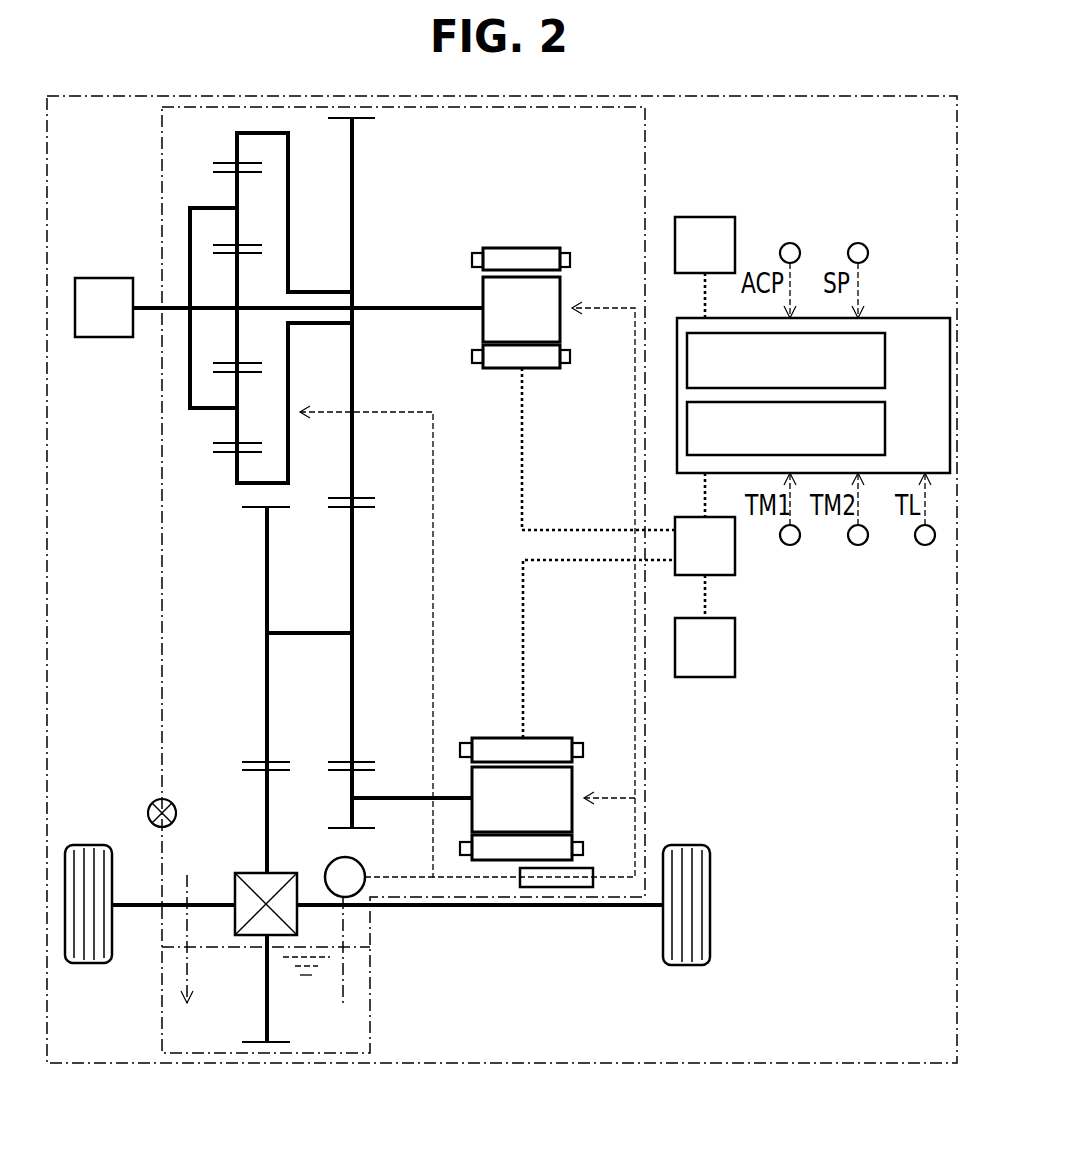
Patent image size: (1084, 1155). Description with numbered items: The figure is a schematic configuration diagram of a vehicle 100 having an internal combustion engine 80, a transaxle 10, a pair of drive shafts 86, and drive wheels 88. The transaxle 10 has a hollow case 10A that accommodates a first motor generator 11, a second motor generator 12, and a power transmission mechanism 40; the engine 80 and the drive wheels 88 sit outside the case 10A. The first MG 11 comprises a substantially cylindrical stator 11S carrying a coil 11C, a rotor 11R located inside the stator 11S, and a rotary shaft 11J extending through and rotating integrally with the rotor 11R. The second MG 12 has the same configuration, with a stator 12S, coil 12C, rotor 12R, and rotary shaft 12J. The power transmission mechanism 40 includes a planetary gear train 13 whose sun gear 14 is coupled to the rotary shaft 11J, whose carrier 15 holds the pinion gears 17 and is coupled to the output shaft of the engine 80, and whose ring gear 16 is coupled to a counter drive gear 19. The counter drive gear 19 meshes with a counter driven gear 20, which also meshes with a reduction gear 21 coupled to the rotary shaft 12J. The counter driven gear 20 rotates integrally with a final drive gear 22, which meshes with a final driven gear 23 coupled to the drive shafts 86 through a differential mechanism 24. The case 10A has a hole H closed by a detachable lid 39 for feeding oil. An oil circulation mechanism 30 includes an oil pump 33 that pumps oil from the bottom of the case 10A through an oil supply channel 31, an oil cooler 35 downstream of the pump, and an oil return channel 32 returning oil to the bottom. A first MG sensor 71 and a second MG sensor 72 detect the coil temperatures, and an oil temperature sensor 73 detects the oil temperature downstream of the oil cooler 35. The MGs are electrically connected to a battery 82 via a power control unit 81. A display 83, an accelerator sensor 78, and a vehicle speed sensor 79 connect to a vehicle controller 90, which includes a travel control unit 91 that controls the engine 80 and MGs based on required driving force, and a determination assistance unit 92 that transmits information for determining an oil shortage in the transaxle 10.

The vehicle 100 is at (645, 97).
The transaxle 10 is at (136, 134).
The case 10A is at (162, 179).
The first motor generator 11 is at (498, 272).
The stator 11S is at (523, 248).
The rotor 11R is at (483, 323).
The coil 11C is at (472, 260).
The rotary shaft 11J is at (367, 308).
The second motor generator 12 is at (497, 763).
The stator 12S is at (558, 738).
The rotor 12R is at (470, 813).
The coil 12C is at (460, 750).
The rotary shaft 12J is at (412, 798).
The planetary gear train 13 is at (252, 118).
The sun gear 14 is at (238, 333).
The carrier 15 is at (206, 208).
The ring gear 16 is at (237, 468).
The pinion gears 17 is at (240, 232).
The counter drive gear 19 is at (352, 369).
The counter driven gear 20 is at (352, 547).
The reduction gear 21 is at (352, 785).
The final drive gear 22 is at (265, 543).
The final driven gear 23 is at (263, 785).
The differential mechanism 24 is at (252, 873).
The oil circulation mechanism 30 is at (355, 917).
The oil supply channel 31 is at (342, 970).
The oil return channel 32 is at (190, 972).
The oil pump 33 is at (343, 857).
The oil cooler 35 is at (587, 867).
The lid 39 is at (147, 813).
The hole H is at (152, 803).
The power transmission mechanism 40 is at (232, 677).
The first MG sensor 71 is at (788, 545).
The second MG sensor 72 is at (856, 545).
The oil temperature sensor 73 is at (923, 545).
The accelerator sensor 78 is at (788, 243).
The vehicle speed sensor 79 is at (856, 243).
The internal combustion engine 80 is at (102, 278).
The power control unit 81 is at (735, 563).
The battery 82 is at (735, 648).
The display 83 is at (705, 217).
The drive shafts 86 is at (143, 903).
The drive wheels 88 is at (85, 967).
The vehicle controller 90 is at (813, 369).
The travel control unit 91 is at (887, 362).
The determination assistance unit 92 is at (887, 430).